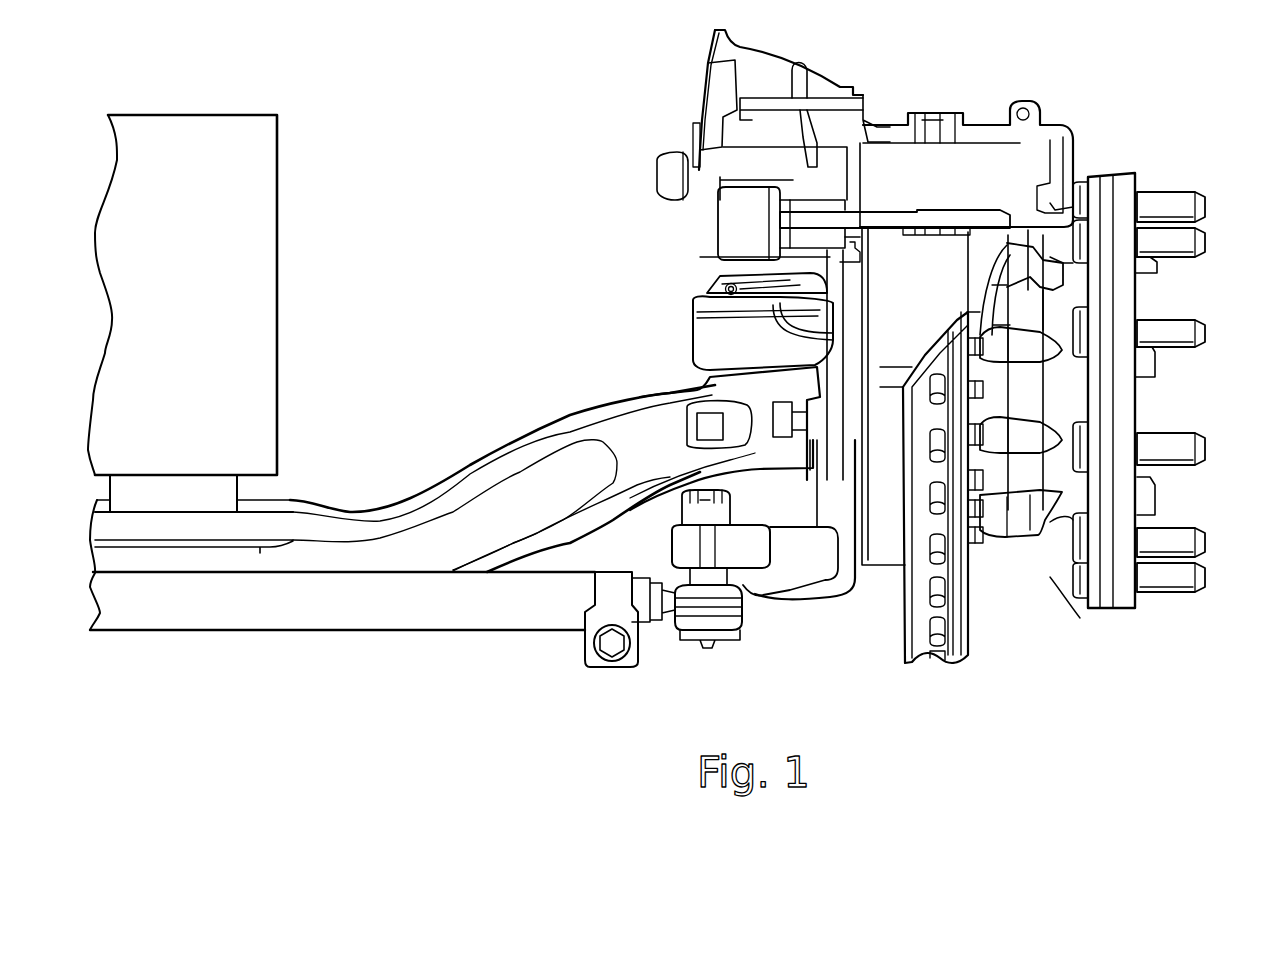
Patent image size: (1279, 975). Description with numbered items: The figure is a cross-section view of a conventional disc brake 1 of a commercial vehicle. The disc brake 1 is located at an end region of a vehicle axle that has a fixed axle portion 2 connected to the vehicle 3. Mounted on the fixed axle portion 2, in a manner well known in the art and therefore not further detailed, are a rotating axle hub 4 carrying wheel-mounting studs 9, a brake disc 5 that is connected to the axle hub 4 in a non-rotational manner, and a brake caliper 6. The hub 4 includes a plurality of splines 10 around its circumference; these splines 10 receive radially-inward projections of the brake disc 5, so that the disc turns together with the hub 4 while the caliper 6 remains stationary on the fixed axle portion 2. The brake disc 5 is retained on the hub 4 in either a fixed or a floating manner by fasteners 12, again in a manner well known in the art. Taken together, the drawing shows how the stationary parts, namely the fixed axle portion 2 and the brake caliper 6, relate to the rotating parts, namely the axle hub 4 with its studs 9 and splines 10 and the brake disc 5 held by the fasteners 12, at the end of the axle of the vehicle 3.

The disc brake 1 is at (584, 273).
The fixed axle portion 2 is at (537, 441).
The vehicle 3 is at (197, 280).
The rotating axle hub 4 is at (1138, 393).
The brake disc 5 is at (967, 623).
The brake caliper 6 is at (1068, 135).
The wheel-mounting studs 9 is at (1208, 333).
The splines 10 is at (1038, 530).
The fasteners 12 is at (982, 543).